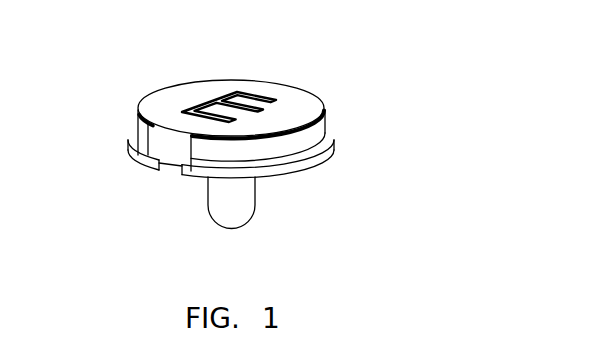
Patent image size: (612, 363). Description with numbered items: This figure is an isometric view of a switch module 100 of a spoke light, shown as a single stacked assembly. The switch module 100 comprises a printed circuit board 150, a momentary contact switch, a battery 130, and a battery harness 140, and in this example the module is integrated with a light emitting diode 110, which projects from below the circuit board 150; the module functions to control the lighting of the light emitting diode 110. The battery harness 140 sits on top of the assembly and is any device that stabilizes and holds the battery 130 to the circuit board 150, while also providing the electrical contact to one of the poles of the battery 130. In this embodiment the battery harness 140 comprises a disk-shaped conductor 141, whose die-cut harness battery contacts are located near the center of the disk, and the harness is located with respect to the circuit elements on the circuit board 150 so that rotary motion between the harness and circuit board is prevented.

The switch module 100 is at (243, 141).
The light emitting diode 110 is at (237, 200).
The battery 130 is at (274, 140).
The battery harness 140 is at (274, 85).
The disk-shaped conductor 141 is at (263, 93).
The printed circuit board 150 is at (344, 162).